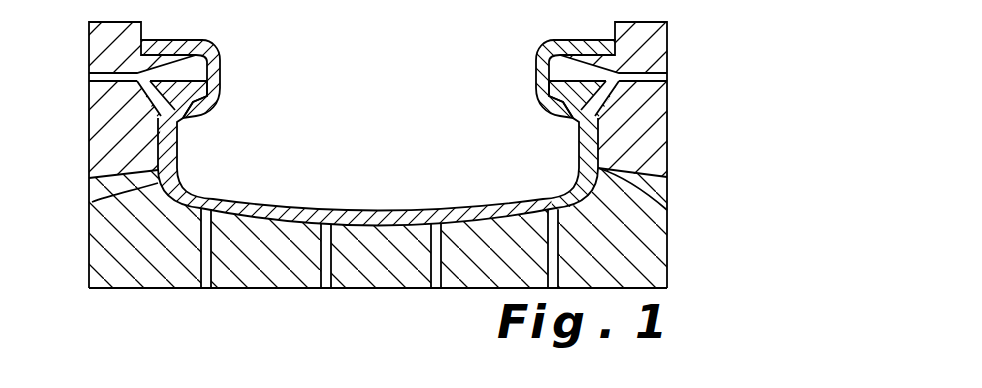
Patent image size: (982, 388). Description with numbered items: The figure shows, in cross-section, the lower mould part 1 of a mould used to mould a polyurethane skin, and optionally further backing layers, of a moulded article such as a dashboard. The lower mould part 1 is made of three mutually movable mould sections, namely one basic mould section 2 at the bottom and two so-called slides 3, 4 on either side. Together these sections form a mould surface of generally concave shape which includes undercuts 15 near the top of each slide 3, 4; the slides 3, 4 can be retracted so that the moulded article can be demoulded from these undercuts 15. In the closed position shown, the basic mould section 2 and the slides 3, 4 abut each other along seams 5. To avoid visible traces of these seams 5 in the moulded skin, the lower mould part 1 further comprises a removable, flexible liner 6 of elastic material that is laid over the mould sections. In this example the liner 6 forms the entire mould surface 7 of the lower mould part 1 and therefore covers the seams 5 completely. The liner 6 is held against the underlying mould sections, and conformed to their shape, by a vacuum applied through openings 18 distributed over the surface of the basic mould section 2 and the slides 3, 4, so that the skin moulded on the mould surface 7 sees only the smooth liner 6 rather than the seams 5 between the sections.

The lower mould part 1 is at (690, 240).
The basic mould section 2 is at (371, 288).
The slide 3 is at (98, 156).
The slide 4 is at (665, 125).
The seam 5 is at (92, 202).
The liner 6 is at (303, 212).
The mould surface 7 is at (408, 203).
The undercut 15 is at (183, 112).
The opening 18 is at (175, 66).